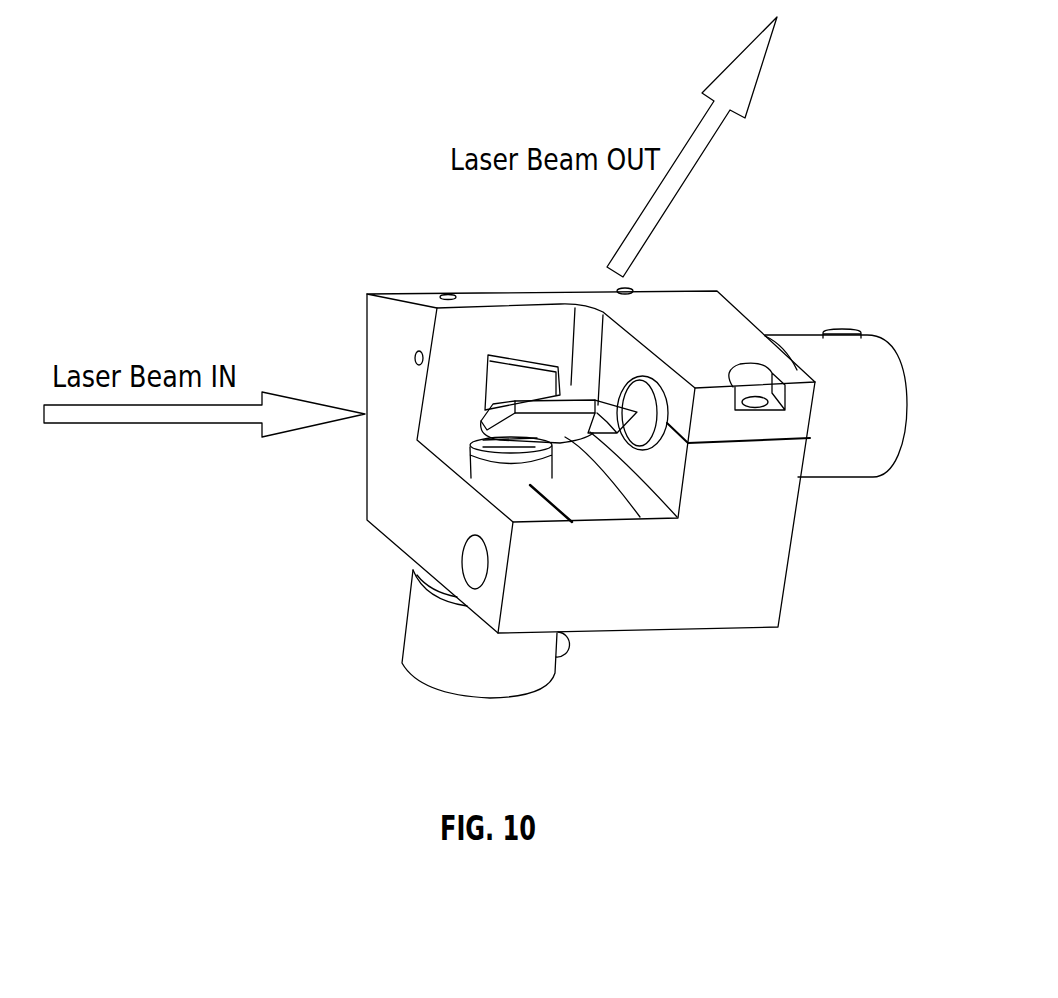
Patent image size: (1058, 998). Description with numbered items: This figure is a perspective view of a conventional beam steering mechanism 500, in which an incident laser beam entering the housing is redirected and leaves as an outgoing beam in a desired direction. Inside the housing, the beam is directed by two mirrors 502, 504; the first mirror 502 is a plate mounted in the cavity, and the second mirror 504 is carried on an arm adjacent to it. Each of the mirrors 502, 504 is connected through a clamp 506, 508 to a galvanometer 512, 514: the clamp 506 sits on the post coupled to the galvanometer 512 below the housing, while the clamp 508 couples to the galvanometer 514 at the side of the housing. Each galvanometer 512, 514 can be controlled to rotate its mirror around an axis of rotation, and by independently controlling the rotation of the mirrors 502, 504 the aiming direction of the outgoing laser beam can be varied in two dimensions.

The optical assembly 500 is at (300, 212).
The mirror 502 is at (510, 377).
The mirror 504 is at (553, 422).
The clamp 506 is at (470, 466).
The clamp 508 is at (665, 462).
The galvanometer 512 is at (413, 632).
The galvanometer 514 is at (882, 364).